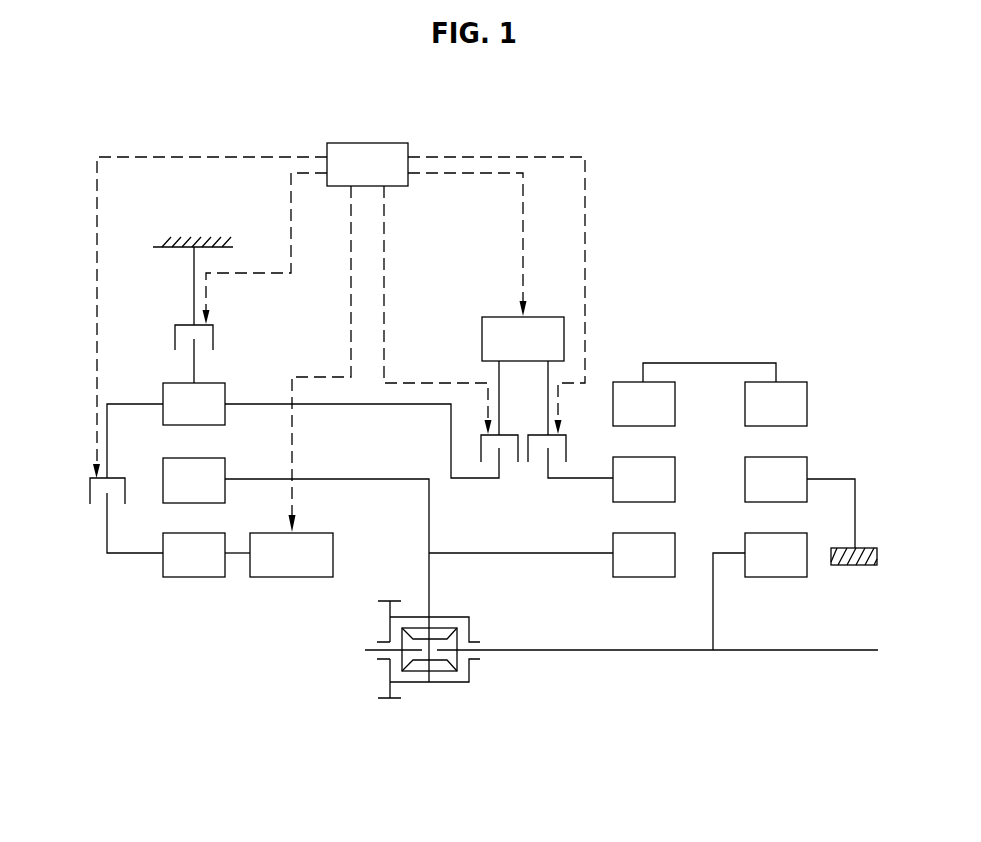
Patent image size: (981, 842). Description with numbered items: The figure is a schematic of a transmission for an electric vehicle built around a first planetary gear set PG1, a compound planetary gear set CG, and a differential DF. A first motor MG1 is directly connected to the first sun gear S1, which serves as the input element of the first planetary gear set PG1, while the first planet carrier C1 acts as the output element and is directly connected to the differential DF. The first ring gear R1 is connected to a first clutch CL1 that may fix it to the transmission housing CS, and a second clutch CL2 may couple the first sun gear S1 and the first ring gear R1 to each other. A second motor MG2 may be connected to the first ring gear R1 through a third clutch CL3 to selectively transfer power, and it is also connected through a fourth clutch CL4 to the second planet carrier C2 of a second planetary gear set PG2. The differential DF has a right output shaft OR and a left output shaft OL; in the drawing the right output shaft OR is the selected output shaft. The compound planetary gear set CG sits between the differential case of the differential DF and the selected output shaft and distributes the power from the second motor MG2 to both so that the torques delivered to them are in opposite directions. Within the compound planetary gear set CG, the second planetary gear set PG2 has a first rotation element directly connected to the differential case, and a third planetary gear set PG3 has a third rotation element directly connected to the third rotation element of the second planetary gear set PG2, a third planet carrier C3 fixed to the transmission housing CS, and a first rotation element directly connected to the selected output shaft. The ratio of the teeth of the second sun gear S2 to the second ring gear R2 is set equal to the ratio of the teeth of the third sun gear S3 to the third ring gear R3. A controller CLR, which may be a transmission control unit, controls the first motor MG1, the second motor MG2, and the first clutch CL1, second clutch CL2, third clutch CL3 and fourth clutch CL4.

The controller CLR is at (339, 337).
The transmission housing CS is at (165, 240).
The first clutch CL1 is at (218, 338).
The second clutch CL2 is at (82, 493).
The third clutch CL3 is at (487, 472).
The fourth clutch CL4 is at (559, 472).
The first motor MG1 is at (291, 555).
The second motor MG2 is at (523, 339).
The first planetary gear set PG1 is at (194, 545).
The second planetary gear set PG2 is at (644, 542).
The third planetary gear set PG3 is at (776, 542).
The compound planetary gear set CG is at (710, 568).
The first ring gear R1 is at (194, 404).
The first planet carrier C1 is at (194, 480).
The first sun gear S1 is at (194, 555).
The second ring gear R2 is at (644, 404).
The second planet carrier C2 is at (644, 479).
The second sun gear S2 is at (644, 555).
The third ring gear R3 is at (776, 404).
The third planet carrier C3 is at (776, 479).
The third sun gear S3 is at (776, 555).
The left output shaft OL is at (377, 654).
The right output shaft OR is at (848, 652).
The differential DF is at (450, 685).